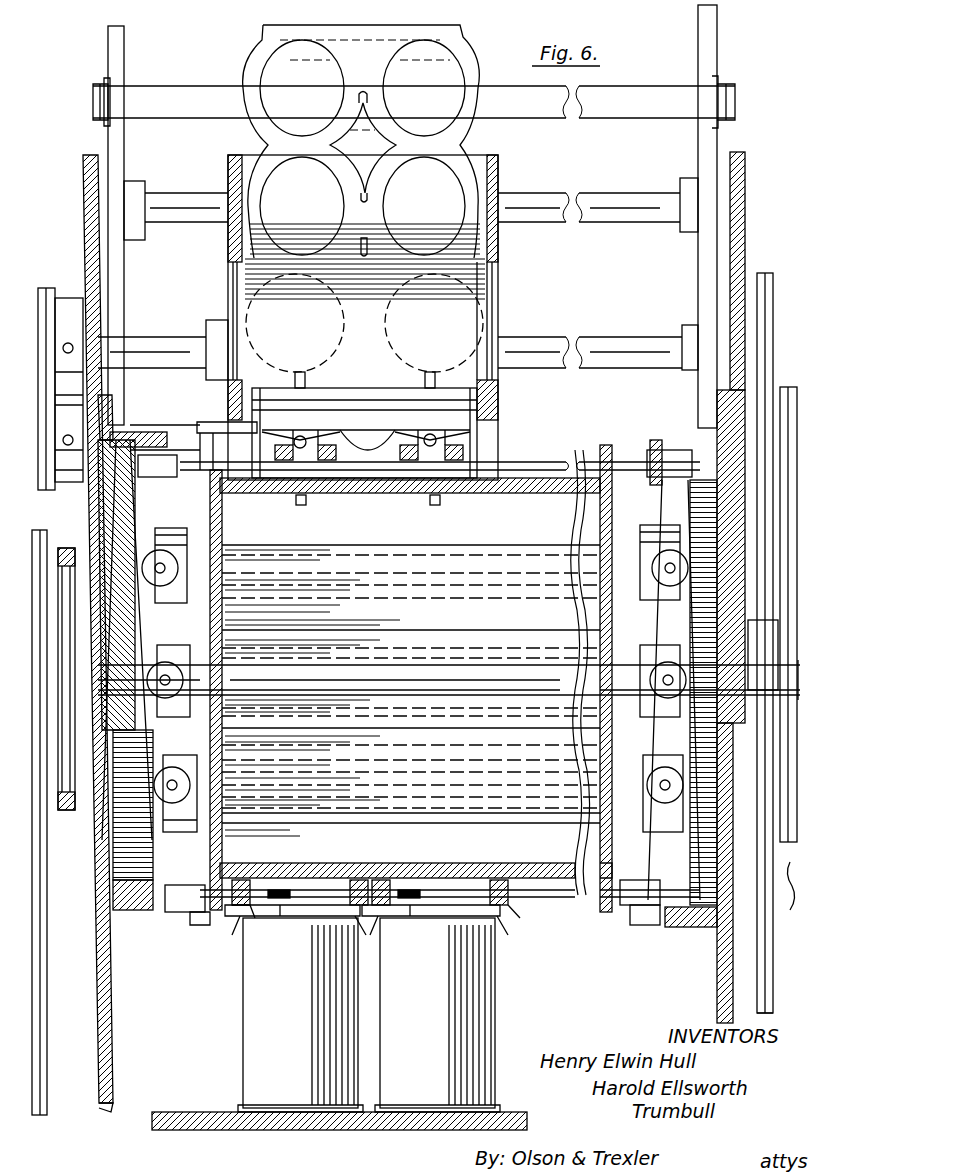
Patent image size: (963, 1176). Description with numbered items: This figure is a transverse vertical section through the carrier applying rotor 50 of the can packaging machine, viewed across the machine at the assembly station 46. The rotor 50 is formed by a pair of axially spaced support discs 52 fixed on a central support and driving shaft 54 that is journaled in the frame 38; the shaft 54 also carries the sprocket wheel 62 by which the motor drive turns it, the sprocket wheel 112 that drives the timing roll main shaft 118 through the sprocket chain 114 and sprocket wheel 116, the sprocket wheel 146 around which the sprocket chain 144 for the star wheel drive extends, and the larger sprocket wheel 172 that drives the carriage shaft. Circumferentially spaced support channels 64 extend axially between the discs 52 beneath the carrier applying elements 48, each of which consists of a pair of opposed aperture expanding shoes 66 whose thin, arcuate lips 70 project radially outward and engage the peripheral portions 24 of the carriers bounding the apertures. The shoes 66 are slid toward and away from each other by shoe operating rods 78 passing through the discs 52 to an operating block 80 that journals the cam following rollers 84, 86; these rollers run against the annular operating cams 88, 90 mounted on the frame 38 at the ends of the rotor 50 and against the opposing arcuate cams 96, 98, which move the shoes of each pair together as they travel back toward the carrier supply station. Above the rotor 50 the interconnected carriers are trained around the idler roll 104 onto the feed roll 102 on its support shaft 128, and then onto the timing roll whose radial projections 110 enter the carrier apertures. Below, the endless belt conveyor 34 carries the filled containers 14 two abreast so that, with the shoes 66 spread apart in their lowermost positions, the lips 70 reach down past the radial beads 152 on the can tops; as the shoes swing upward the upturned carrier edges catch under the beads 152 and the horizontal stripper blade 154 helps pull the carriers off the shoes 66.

The containers 14 is at (488, 1007).
The peripheral portions 24 is at (235, 908).
The endless belt conveyor 34 is at (185, 1120).
The frame 38 is at (113, 1071).
The assembly station 46 is at (520, 950).
The carrier applying elements 48 is at (322, 428).
The rotor 50 is at (599, 944).
The support discs 52 is at (222, 848).
The central support and driving shaft 54 is at (392, 680).
The sprocket wheel 62 is at (68, 812).
The support channels 64 is at (322, 497).
The aperture expanding shoes 66 is at (262, 878).
The carrier aperture expanding and deflecting lip 70 is at (240, 920).
The shoe operating rods 78 is at (368, 452).
The operating block 80 is at (165, 645).
The cam following roller 84 is at (165, 755).
The cam following roller 86 is at (662, 645).
The annular operating cam 88 is at (168, 914).
The annular operating cam 90 is at (668, 927).
The arcuate cam 96 is at (178, 525).
The arcuate cam 98 is at (662, 525).
The feed roll 102 is at (500, 310).
The idler roll 104 is at (500, 180).
The radial projections 110 is at (302, 435).
The sprocket wheel 112 is at (733, 722).
The sprocket chain 114 is at (772, 995).
The sprocket wheel 116 is at (770, 400).
The main shaft 118 is at (585, 460).
The support shaft 128 is at (598, 338).
The sprocket chain 144 is at (47, 1070).
The sprocket wheel 146 is at (66, 535).
The radial beads 152 is at (288, 905).
The stripper blade 154 is at (308, 890).
The sprocket wheel 172 is at (793, 894).